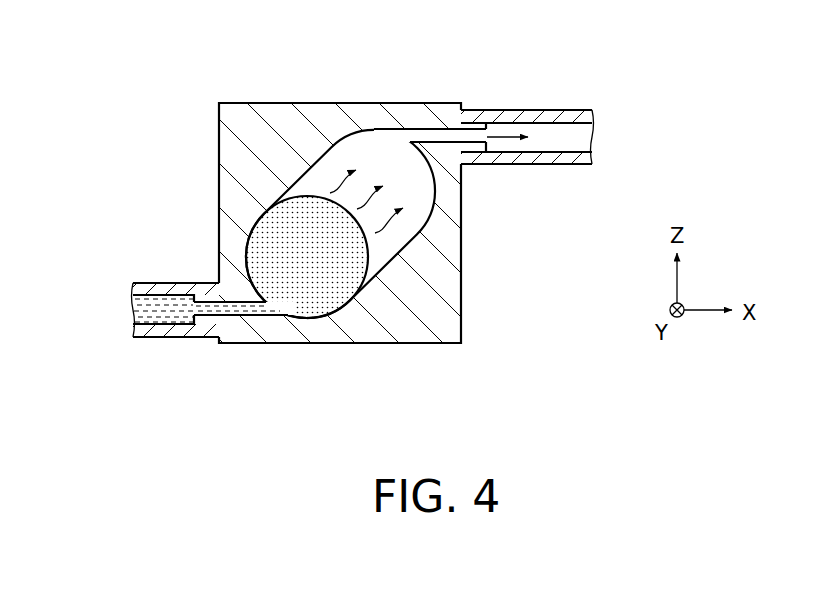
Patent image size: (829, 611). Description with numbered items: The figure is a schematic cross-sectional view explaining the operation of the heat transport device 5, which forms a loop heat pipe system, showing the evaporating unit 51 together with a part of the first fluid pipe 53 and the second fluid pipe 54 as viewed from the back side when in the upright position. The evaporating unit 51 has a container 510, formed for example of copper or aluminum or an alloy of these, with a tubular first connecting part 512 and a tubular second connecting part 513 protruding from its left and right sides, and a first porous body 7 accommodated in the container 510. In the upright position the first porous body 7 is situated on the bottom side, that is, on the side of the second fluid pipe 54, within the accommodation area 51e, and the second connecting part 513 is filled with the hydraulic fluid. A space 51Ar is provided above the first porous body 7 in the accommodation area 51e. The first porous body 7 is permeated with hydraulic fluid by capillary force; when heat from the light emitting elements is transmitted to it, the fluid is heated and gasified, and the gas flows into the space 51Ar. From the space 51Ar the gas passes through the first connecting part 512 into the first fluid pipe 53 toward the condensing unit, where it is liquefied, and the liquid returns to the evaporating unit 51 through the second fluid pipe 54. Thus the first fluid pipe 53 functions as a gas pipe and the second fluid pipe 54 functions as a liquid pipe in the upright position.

The heat transport device 5 is at (331, 204).
The evaporating unit 51 is at (331, 204).
The accommodation area 51e is at (322, 187).
The space 51Ar is at (370, 153).
The first fluid pipe 53 is at (510, 117).
The first connecting part 512 is at (472, 148).
The container 510 is at (450, 292).
The second fluid pipe 54 is at (160, 290).
The second connecting part 513 is at (202, 327).
The first porous body 7 is at (322, 297).